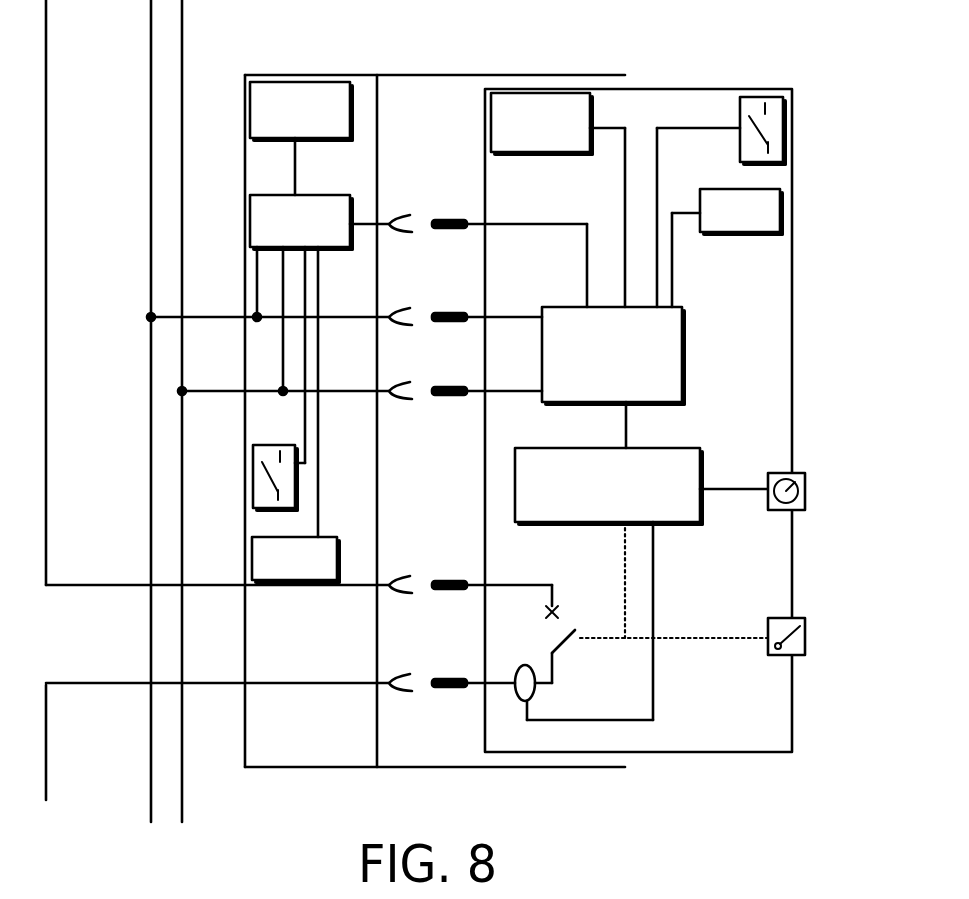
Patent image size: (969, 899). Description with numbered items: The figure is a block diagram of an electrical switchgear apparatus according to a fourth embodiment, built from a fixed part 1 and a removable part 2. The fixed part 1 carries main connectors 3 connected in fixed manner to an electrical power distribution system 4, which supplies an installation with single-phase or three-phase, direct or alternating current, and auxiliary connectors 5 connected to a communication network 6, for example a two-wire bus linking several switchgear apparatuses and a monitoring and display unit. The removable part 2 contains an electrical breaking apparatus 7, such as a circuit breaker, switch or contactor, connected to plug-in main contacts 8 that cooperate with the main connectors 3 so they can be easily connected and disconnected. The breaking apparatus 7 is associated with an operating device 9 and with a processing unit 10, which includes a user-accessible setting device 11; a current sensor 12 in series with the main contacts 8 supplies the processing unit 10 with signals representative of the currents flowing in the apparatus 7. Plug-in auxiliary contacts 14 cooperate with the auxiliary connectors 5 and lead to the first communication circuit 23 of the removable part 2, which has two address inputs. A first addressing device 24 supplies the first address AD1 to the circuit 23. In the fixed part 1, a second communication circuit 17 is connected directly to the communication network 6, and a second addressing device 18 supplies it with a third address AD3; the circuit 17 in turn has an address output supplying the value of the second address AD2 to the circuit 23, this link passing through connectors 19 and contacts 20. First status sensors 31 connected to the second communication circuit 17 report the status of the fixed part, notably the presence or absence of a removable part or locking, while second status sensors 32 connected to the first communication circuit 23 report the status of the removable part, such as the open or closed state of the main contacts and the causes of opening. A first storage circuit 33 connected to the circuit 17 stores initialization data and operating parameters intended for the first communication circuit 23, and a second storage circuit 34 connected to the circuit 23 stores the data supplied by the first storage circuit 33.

The fixed part 1 is at (428, 75).
The removable part 2 is at (792, 318).
The main connectors 3 is at (402, 606).
The electrical power distribution system 4 is at (46, 588).
The auxiliary connectors 5 is at (406, 322).
The communication network 6 is at (190, 36).
The electrical breaking apparatus 7 is at (571, 582).
The main contacts 8 is at (446, 606).
The operating device 9 is at (794, 617).
The processing unit 10 is at (704, 454).
The setting device 11 is at (794, 472).
The current sensor 12 is at (534, 690).
The auxiliary contacts 14 is at (450, 322).
The second communication circuit 17 is at (330, 250).
The second addressing device 18 is at (293, 81).
The connectors 19 is at (405, 216).
The contacts 20 is at (451, 218).
The first communication circuit 23 is at (686, 380).
The first addressing device 24 is at (552, 94).
The first status sensors 31 is at (252, 478).
The second status sensors 32 is at (788, 124).
The first storage circuit 33 is at (338, 542).
The second storage circuit 34 is at (786, 210).
The first address AD1 is at (620, 224).
The second address AD2 is at (496, 222).
The third address AD3 is at (300, 168).